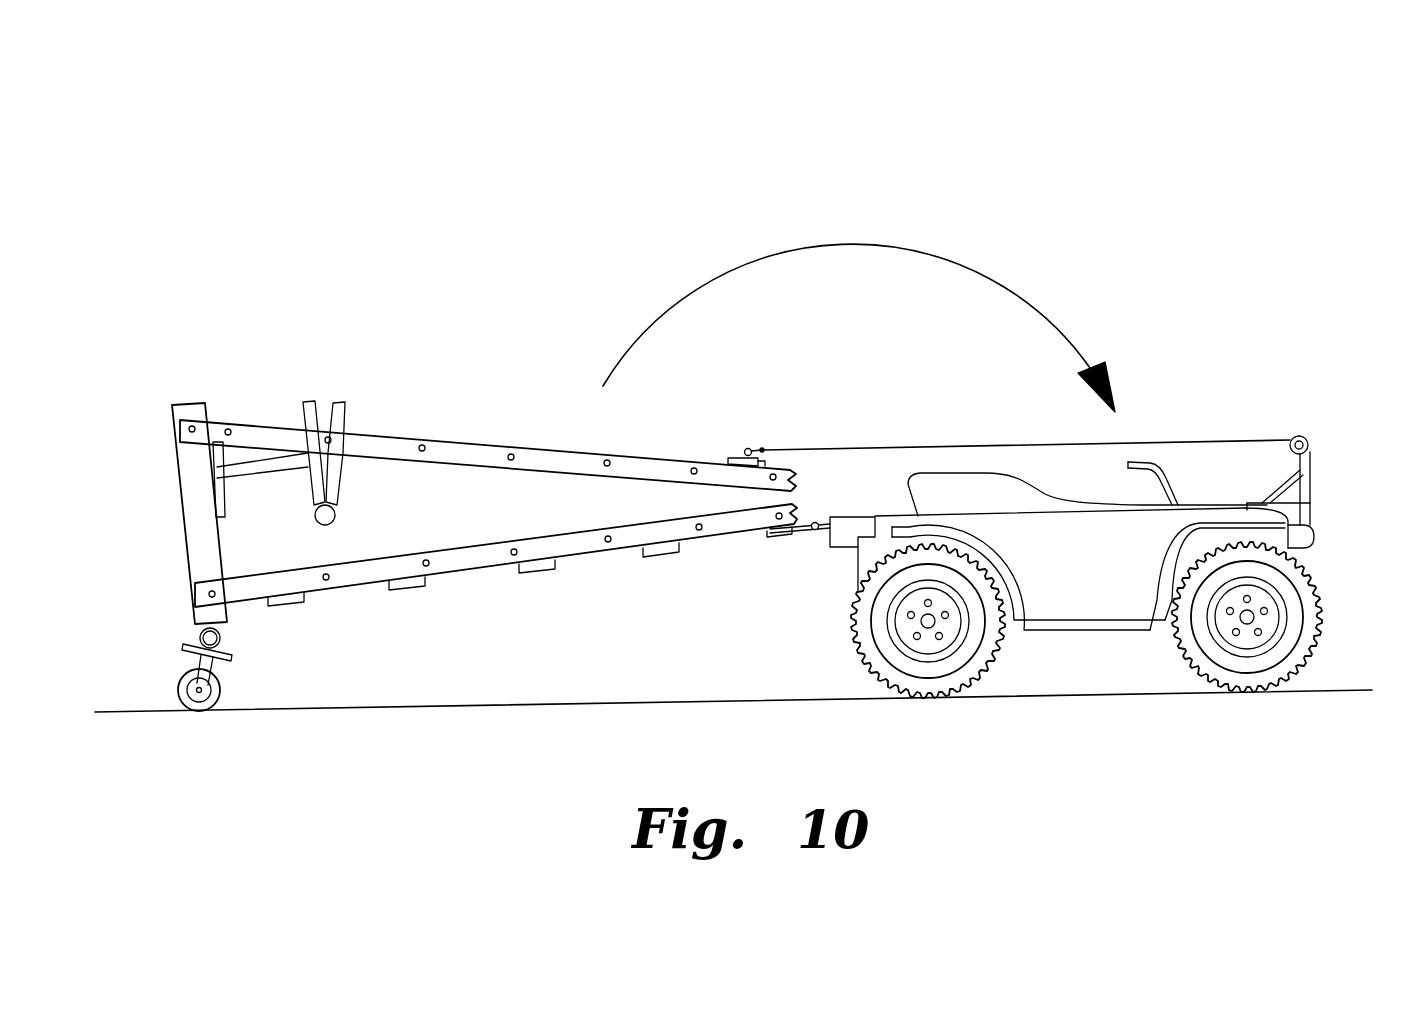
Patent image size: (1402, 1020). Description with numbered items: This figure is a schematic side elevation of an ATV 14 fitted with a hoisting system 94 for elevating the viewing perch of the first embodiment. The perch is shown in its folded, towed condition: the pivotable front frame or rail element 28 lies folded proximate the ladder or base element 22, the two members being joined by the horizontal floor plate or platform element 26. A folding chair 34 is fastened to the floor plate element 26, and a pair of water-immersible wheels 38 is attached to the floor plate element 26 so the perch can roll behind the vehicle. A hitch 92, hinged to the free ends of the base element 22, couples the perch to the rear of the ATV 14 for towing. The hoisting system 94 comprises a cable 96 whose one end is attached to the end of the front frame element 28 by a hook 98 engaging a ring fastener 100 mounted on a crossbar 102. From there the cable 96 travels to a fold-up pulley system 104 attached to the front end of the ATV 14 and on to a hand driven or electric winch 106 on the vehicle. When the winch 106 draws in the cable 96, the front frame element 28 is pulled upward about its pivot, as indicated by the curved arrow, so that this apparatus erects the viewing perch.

The ATV 14 is at (1108, 582).
The ladder or base element 22 is at (480, 560).
The floor plate or platform element 26 is at (187, 512).
The front frame or rail element 28 is at (547, 448).
The folding chair 34 is at (340, 407).
The water-immersible wheels 38 is at (182, 683).
The hitch 92 is at (811, 528).
The hoisting system 94 is at (1100, 212).
The cable 96 is at (1032, 441).
The hook 98 is at (763, 449).
The ring fastener 100 is at (746, 451).
The crossbar 102 is at (765, 458).
The fold-up pulley system 104 is at (1321, 430).
The hand driven or electric winch 106 is at (1340, 548).